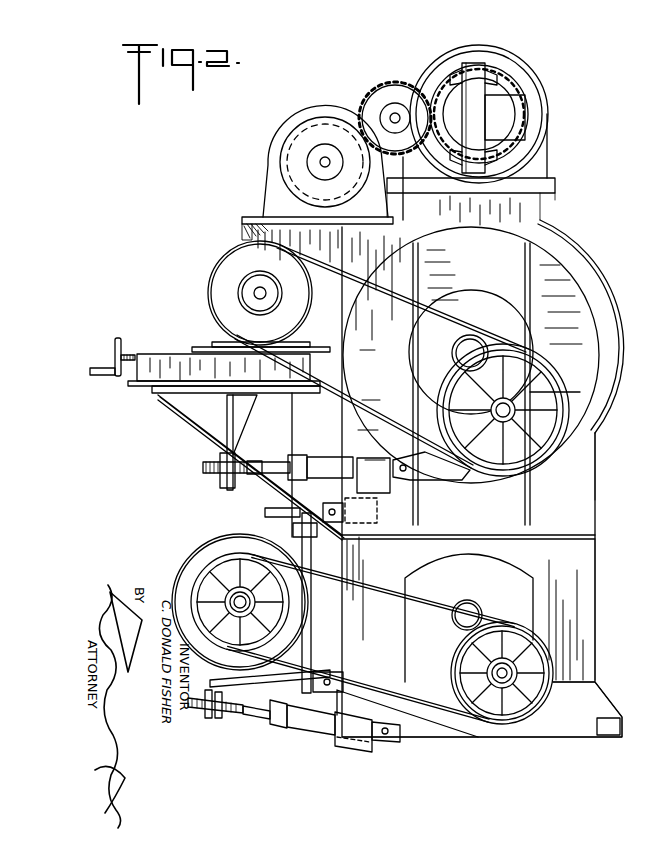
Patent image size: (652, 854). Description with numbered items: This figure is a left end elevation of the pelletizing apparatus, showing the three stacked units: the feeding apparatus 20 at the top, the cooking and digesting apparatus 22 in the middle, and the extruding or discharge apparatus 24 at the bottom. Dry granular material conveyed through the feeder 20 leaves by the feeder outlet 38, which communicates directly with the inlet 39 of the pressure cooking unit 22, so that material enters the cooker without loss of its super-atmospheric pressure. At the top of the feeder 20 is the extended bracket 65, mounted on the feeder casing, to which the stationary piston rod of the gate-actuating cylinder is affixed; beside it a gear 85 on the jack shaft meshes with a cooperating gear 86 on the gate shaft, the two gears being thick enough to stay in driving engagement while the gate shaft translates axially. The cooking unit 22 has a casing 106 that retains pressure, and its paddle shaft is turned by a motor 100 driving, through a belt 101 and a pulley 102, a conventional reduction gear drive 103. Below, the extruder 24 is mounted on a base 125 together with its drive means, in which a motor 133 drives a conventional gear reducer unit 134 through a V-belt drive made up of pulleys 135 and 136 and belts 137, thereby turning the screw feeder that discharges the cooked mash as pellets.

The feeding apparatus 20 is at (559, 93).
The cooking and digesting apparatus 22 is at (611, 436).
The extruding or discharge apparatus 24 is at (608, 578).
The outlet of feeder 38 is at (528, 160).
The inlet of cooking and conditioning apparatus 39 is at (532, 212).
The extended bracket 65 is at (473, 65).
The gear 85 is at (383, 86).
The cooperating gear 86 is at (450, 155).
The motor 100 is at (207, 296).
The belt 101 is at (388, 294).
The pulley 102 is at (555, 358).
The reduction gear drive 103 is at (483, 301).
The casing 106 is at (577, 258).
The base 125 is at (582, 703).
The motor 133 is at (200, 545).
The gear reducer unit 134 is at (505, 580).
The pulley 135 is at (197, 580).
The pulley 136 is at (535, 714).
The belts 137 is at (387, 577).